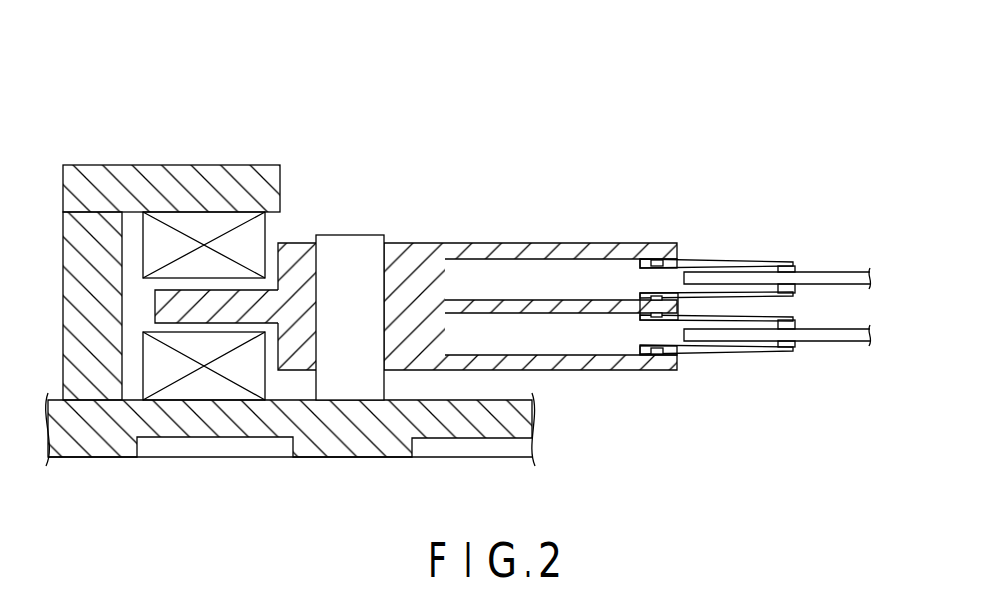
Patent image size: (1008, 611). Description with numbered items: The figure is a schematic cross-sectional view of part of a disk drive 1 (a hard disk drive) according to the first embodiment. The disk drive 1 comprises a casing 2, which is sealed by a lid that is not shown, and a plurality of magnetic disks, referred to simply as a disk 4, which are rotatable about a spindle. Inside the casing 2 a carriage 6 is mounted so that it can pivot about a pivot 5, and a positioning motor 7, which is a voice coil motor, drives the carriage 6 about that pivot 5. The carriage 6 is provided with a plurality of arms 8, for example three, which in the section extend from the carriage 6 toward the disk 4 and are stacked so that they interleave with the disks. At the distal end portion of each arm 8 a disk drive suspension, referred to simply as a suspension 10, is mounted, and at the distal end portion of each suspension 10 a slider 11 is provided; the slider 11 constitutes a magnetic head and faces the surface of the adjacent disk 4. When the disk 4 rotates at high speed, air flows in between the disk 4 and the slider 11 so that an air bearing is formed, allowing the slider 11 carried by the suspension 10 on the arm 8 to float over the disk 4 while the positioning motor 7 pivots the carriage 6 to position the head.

The disk drive 1 is at (222, 120).
The casing 2 is at (108, 460).
The disk 4 is at (843, 272).
The pivot 5 is at (352, 245).
The carriage 6 is at (501, 243).
The positioning motor 7 is at (205, 388).
The arm 8 is at (580, 244).
The suspension 10 is at (721, 258).
The slider 11 is at (797, 268).